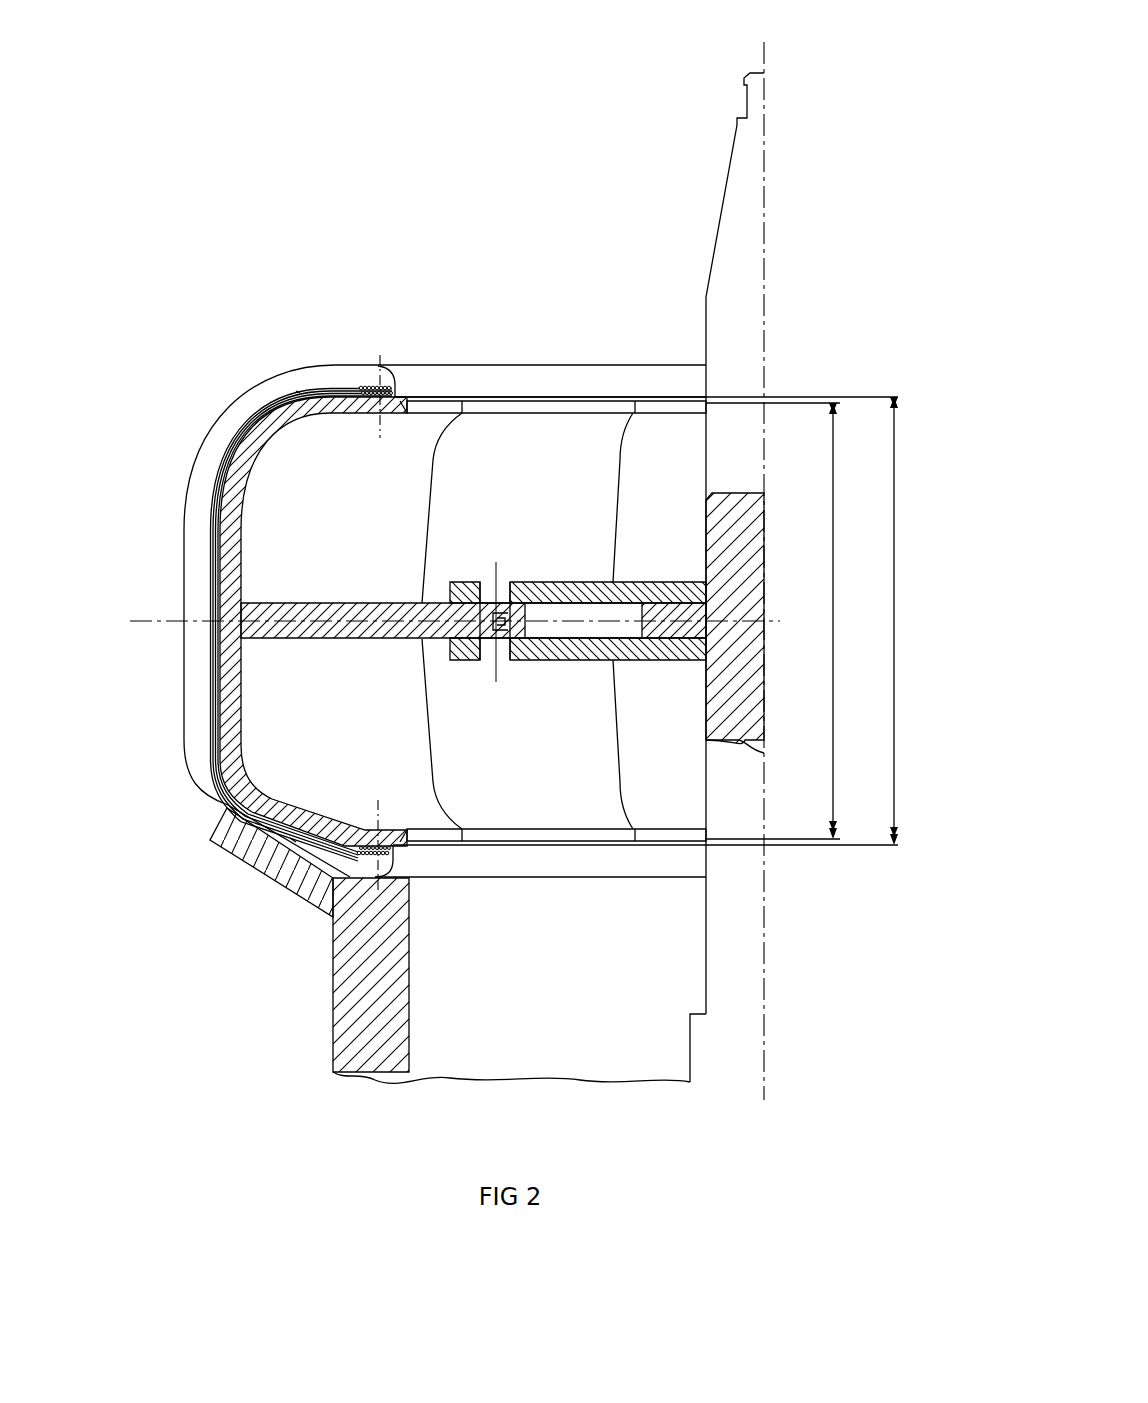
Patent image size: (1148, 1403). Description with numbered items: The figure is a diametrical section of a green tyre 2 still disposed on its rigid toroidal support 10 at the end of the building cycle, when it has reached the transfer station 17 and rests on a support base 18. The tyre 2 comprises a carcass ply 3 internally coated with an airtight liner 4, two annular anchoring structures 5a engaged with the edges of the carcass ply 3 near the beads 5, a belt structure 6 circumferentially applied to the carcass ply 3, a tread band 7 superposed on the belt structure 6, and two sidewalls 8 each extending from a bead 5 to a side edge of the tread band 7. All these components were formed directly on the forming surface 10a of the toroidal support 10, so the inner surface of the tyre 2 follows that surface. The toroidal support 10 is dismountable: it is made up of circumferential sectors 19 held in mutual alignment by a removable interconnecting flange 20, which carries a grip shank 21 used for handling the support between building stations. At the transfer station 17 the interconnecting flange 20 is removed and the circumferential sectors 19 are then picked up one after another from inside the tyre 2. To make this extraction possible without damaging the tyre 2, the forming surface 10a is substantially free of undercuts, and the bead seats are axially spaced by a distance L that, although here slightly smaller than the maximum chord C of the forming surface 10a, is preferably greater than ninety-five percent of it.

The transfer station 17 is at (221, 172).
The tyre 2 is at (192, 450).
The carcass ply 3 is at (277, 417).
The liner 4 is at (230, 742).
The bead 5 is at (413, 383).
The annular anchoring structure 5a is at (372, 386).
The belt structure 6 is at (220, 764).
The tread band 7 is at (183, 549).
The sidewall 8 is at (300, 393).
The rigid toroidal support 10 is at (588, 392).
The forming surface 10a is at (240, 863).
The support base 18 is at (352, 1033).
The circumferential sector 19 is at (445, 410).
The interconnecting flange 20 is at (550, 593).
The grip shank 21 is at (743, 448).
The axial distance between bead seats L is at (833, 600).
The maximum chord C is at (894, 629).